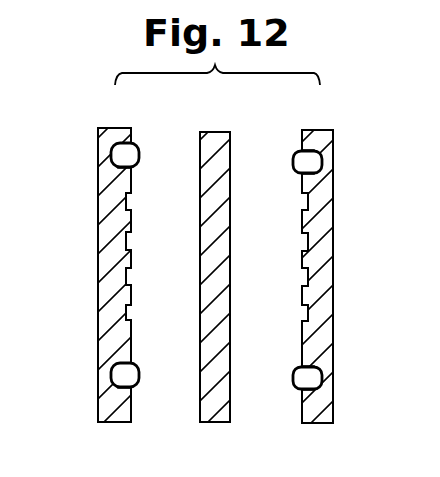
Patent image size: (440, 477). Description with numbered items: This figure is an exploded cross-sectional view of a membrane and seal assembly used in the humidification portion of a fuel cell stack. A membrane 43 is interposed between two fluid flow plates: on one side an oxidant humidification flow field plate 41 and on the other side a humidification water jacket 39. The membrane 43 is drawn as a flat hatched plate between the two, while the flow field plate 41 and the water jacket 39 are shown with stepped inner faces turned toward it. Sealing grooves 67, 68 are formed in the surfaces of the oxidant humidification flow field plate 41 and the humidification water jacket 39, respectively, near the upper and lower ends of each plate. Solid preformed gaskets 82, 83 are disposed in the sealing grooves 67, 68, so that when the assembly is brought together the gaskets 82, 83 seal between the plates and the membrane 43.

The oxidant humidification flow field plate 41 is at (112, 422).
The membrane 43 is at (216, 422).
The humidification water jacket 39 is at (320, 423).
The sealing groove 67 is at (113, 162).
The sealing groove 68 is at (322, 164).
The solid preformed gasket 82 is at (137, 148).
The solid preformed gasket 83 is at (296, 151).